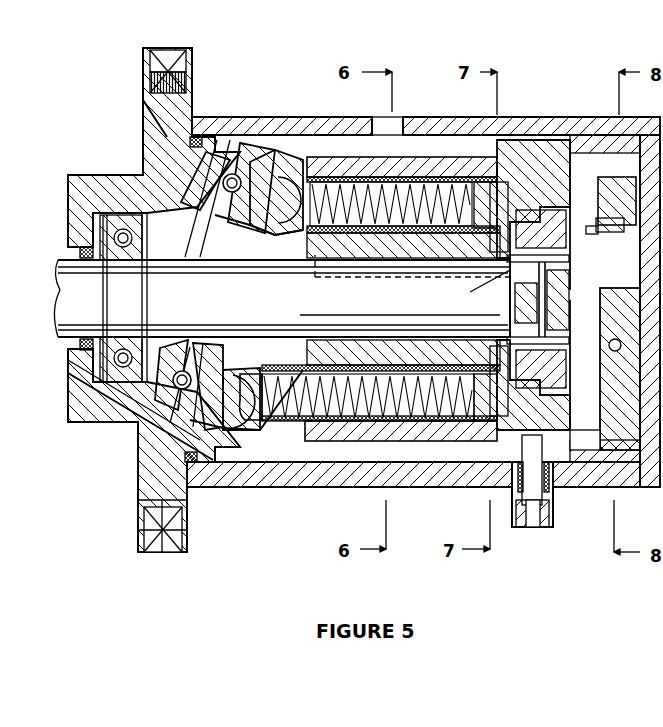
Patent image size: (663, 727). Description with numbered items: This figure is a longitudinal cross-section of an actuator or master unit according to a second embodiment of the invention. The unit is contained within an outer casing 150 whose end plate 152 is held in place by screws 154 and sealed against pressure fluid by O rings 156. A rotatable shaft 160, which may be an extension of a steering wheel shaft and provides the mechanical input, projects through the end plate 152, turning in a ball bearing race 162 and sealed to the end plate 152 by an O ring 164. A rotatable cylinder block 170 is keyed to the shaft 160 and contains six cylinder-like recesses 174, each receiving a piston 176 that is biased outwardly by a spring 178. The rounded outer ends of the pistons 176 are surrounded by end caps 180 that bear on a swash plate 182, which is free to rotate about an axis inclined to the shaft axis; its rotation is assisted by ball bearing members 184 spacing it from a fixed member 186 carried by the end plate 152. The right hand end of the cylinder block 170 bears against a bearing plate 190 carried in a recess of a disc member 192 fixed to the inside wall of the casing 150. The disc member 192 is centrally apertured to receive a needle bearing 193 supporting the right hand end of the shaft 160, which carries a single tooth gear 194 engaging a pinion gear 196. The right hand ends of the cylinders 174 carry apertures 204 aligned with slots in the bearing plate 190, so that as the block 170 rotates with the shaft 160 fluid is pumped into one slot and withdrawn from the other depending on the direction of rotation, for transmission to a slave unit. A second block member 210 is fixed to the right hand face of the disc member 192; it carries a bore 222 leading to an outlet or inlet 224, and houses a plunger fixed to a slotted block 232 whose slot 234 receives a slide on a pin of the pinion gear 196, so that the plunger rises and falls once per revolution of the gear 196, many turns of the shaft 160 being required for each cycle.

The outer casing 150 is at (314, 117).
The end plate 152 is at (80, 175).
The screws 154 is at (143, 80).
The O rings 156 is at (208, 137).
The rotatable shaft 160 is at (70, 302).
The ball bearing race 162 is at (112, 213).
The O ring 164 is at (68, 352).
The rotatable cylinder block 170 is at (407, 157).
The cylinder-like recesses 174 is at (438, 441).
The pistons 176 is at (330, 233).
The springs 178 is at (268, 425).
The end caps 180 is at (303, 232).
The swash plate 182 is at (258, 150).
The ball bearing members 184 is at (222, 160).
The fixed member 186 is at (236, 175).
The bearing plate 190 is at (505, 190).
The disc member 192 is at (565, 147).
The needle bearing 193 is at (510, 270).
The single tooth gear 194 is at (602, 290).
The pinion gear 196 is at (604, 177).
The apertures 204 is at (498, 185).
The second block member 210 is at (600, 445).
The bore 222 is at (490, 430).
The outlet (or inlet) 224 is at (553, 527).
The slotted block 232 is at (598, 218).
The slot 234 is at (590, 226).